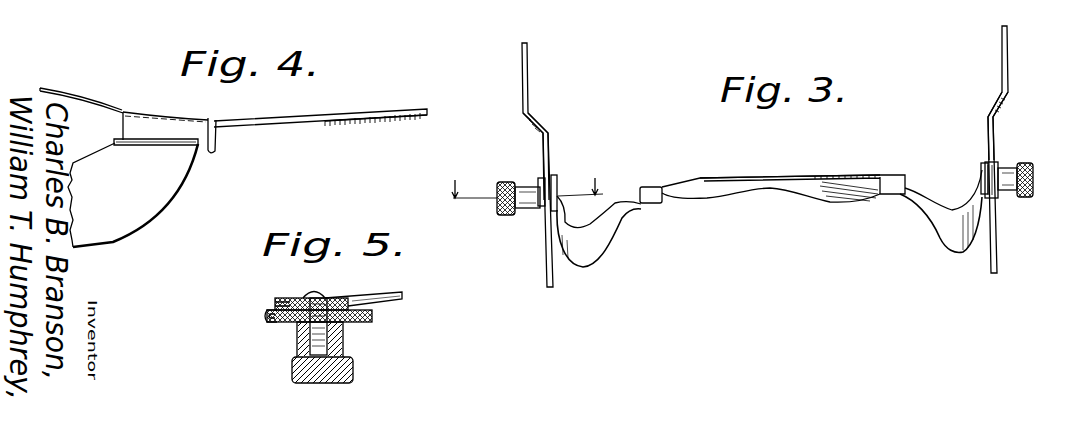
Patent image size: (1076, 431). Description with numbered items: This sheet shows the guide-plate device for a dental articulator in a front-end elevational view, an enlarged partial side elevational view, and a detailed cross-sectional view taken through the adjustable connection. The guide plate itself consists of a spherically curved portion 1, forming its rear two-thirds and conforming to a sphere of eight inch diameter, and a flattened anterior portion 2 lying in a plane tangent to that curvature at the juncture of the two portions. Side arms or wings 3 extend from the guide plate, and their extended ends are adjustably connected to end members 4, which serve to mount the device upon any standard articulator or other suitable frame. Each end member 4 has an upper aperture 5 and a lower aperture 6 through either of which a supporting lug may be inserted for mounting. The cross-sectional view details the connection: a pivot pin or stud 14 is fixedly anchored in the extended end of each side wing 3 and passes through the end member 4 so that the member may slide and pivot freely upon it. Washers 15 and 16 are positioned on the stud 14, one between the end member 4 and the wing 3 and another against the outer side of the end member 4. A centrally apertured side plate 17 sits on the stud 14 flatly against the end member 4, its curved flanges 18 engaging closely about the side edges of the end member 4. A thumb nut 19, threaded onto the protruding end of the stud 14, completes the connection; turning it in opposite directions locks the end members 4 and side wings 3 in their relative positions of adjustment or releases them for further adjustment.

In FIG. 4, the spherically curved portion 1 is at (271, 121).
In FIG. 3, the spherically curved portion 1 is at (708, 192).
In FIG. 4, the flattened anterior portion 2 is at (406, 110).
In FIG. 3, the flattened anterior portion 2 is at (776, 177).
In FIG. 4, the side arms or wings 3 is at (157, 193).
In FIG. 3, the side arms or wings 3 is at (590, 253).
In FIG. 5, the side arms or wings 3 is at (385, 293).
In FIG. 3, the adjustable end members 4 is at (548, 133).
In FIG. 5, the adjustable end members 4 is at (277, 300).
In FIG. 3, the upper aperture 5 is at (527, 177).
In FIG. 3, the lower aperture 6 is at (528, 60).
In FIG. 5, the pivot pin or stud 14 is at (344, 338).
In FIG. 3, the washer 15 is at (555, 170).
In FIG. 5, the washer 15 is at (375, 302).
In FIG. 3, the washer 16 is at (1004, 164).
In FIG. 5, the washer 16 is at (296, 323).
In FIG. 5, the side plate 17 is at (270, 323).
In FIG. 3, the curved flanges 18 is at (538, 210).
In FIG. 5, the curved flanges 18 is at (375, 313).
In FIG. 3, the thumb nut 19 is at (504, 182).
In FIG. 5, the thumb nut 19 is at (353, 370).